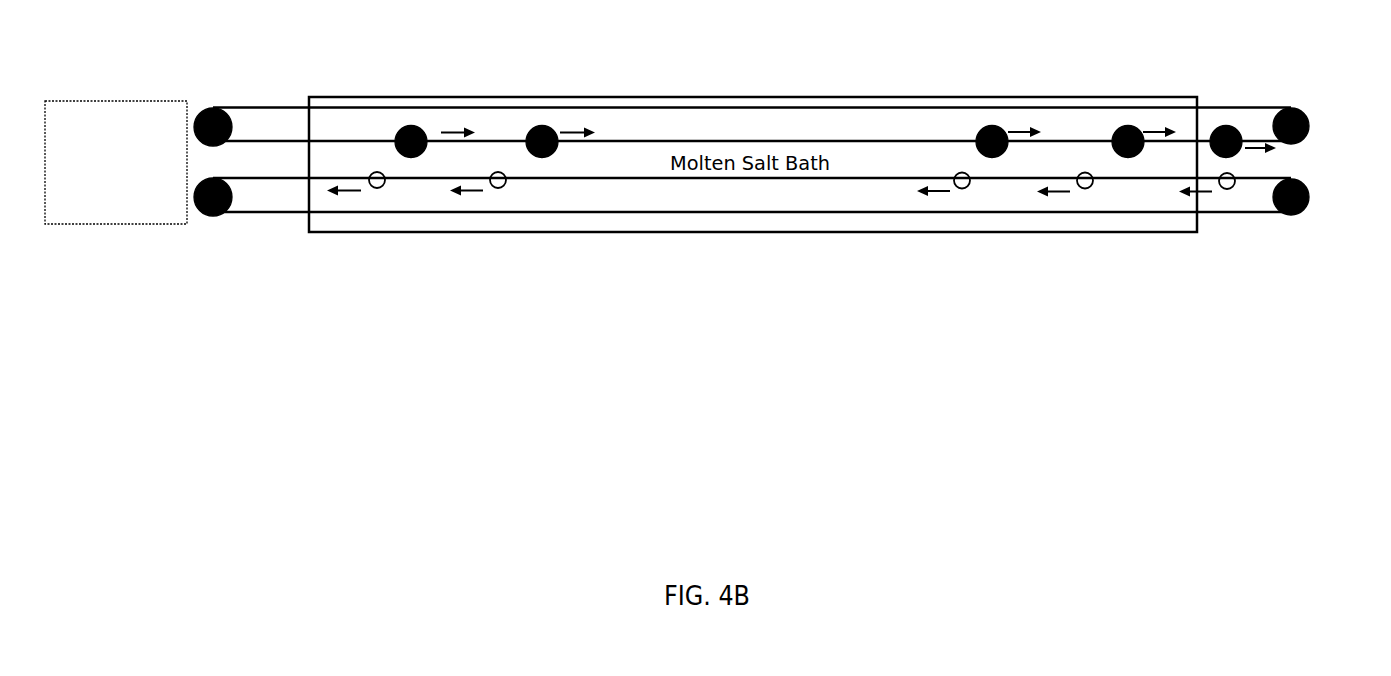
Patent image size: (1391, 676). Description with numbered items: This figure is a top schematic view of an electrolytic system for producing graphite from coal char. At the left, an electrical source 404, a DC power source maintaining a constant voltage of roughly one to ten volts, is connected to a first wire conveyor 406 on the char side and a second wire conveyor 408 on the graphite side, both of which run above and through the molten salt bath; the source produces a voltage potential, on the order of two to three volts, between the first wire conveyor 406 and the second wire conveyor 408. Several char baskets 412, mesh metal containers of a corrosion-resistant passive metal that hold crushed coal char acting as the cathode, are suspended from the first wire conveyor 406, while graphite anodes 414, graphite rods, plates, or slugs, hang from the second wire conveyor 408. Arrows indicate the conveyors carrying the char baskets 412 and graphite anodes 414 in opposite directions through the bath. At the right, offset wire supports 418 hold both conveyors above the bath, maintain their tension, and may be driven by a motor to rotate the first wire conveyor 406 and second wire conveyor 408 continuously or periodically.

The electrical source 404 is at (92, 100).
The first wire conveyor 406 is at (877, 106).
The second wire conveyor 408 is at (887, 210).
The char basket 412 is at (412, 125).
The graphite anode 414 is at (377, 193).
The offset wire supports 418 is at (1288, 112).